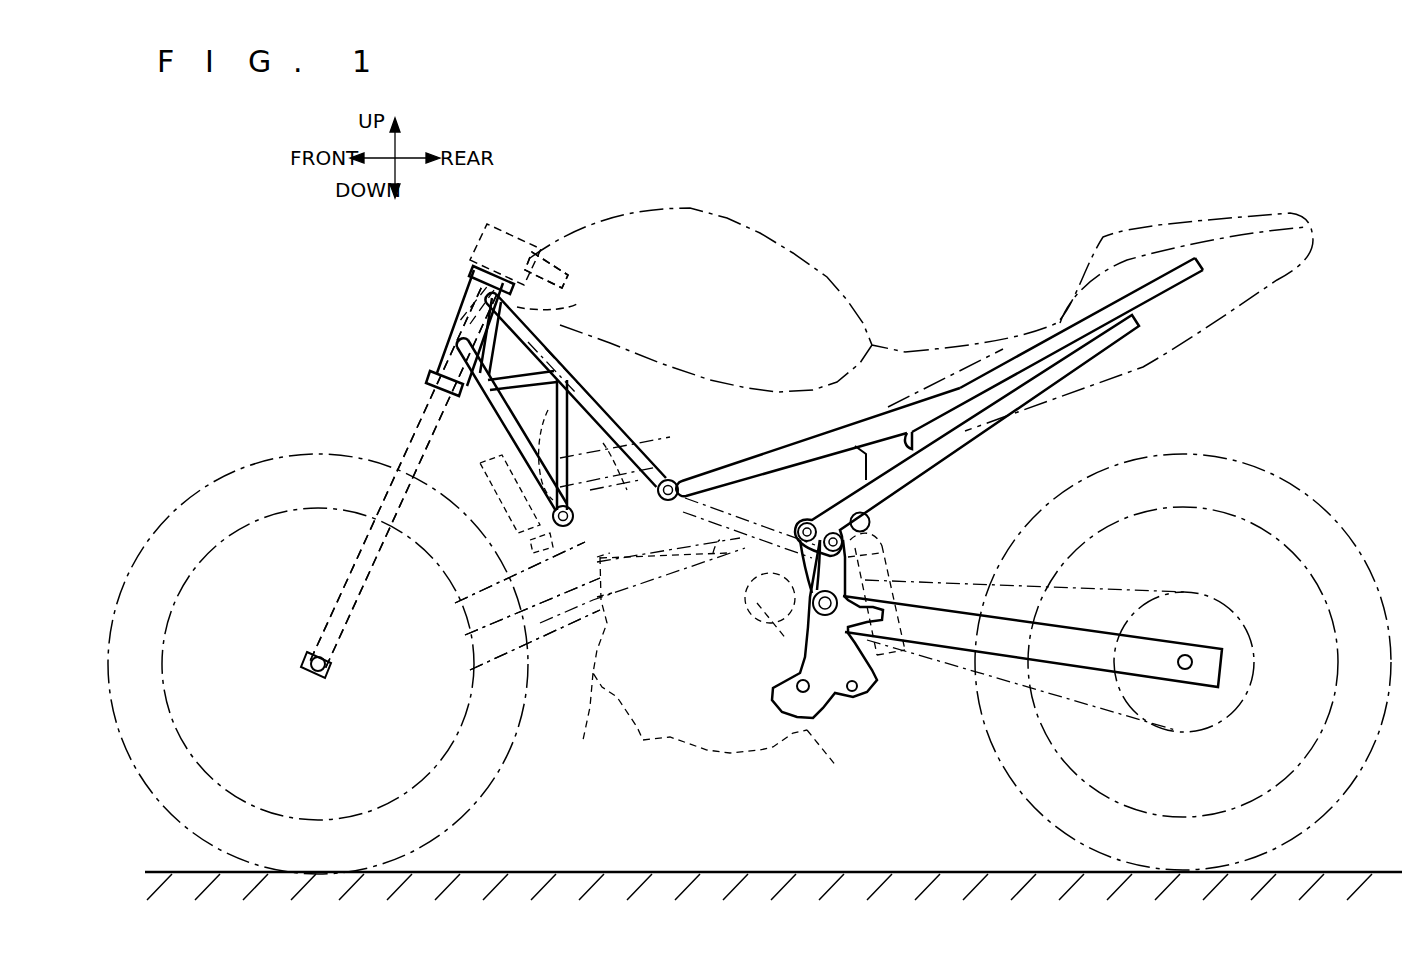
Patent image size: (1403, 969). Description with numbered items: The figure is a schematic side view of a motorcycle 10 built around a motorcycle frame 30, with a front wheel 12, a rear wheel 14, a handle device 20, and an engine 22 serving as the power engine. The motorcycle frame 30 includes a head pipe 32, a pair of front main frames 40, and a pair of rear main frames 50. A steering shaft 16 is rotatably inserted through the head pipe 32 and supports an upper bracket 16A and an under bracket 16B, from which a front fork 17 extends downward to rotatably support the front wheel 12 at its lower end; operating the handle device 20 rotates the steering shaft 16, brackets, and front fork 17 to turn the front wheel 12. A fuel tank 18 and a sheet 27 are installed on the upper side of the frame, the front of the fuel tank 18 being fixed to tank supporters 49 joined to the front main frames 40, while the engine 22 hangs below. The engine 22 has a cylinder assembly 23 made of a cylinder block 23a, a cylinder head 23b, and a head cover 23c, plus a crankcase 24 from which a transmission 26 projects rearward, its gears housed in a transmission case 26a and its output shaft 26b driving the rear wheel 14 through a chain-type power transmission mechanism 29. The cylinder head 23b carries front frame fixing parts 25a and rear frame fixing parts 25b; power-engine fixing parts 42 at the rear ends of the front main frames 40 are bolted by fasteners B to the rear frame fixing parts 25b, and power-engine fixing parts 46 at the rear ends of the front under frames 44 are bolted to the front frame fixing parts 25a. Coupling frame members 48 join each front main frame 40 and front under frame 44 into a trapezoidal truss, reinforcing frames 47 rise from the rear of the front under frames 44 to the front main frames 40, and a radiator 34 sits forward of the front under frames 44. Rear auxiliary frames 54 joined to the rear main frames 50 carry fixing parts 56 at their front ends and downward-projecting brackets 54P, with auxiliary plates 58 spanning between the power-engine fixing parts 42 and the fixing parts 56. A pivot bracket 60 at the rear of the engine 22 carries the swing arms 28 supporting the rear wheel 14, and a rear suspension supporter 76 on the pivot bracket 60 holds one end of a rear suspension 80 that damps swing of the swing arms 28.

The motorcycle 10 is at (861, 151).
The front wheel 12 is at (435, 835).
The rear wheel 14 is at (1295, 828).
The steering shaft 16 is at (445, 335).
The upper bracket 16A is at (475, 282).
The under bracket 16B is at (425, 382).
The front fork 17 is at (345, 582).
The fuel tank 18 is at (644, 210).
The handle device 20 is at (557, 262).
The engine 22 is at (773, 750).
The cylinder assembly 23 is at (412, 592).
The cylinder block 23a is at (472, 669).
The cylinder head 23b is at (472, 634).
The head cover 23c is at (477, 597).
The crankcase 24 is at (689, 658).
The front frame fixing parts 25a is at (548, 410).
The rear frame fixing parts 25b is at (668, 500).
The transmission 26 is at (732, 760).
The transmission case 26a is at (815, 760).
The output shaft 26b is at (760, 635).
The sheet 27 is at (966, 340).
The swing arms 28 is at (1088, 680).
The power transmission mechanism 29 is at (935, 660).
The motorcycle frame 30 is at (758, 405).
The head pipe 32 is at (470, 292).
The radiator 34 is at (475, 480).
The front main frames 40 is at (585, 392).
The power-engine fixing parts 42 is at (668, 478).
The front under frames 44 is at (500, 420).
The power-engine fixing parts 46 is at (550, 540).
The reinforcing frames 47 is at (570, 436).
The coupling frame members 48 is at (540, 384).
The tank supporters 49 is at (560, 305).
The rear main frames 50 is at (828, 445).
The rear auxiliary frames 54 is at (953, 443).
The brackets 54P is at (832, 530).
The fixing parts 56 is at (812, 522).
The auxiliary plates 58 is at (718, 550).
The pivot bracket 60 is at (800, 565).
The rear suspension supporter 76 is at (866, 515).
The rear suspension 80 is at (905, 553).
The fasteners B is at (573, 514).